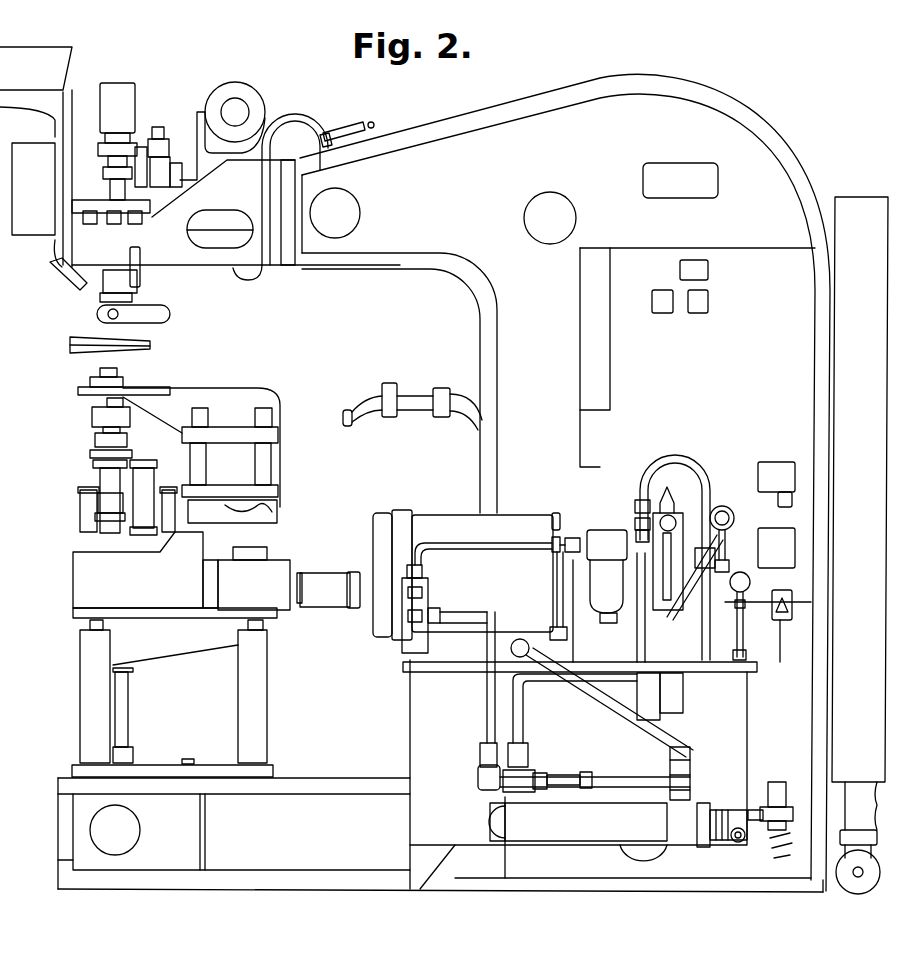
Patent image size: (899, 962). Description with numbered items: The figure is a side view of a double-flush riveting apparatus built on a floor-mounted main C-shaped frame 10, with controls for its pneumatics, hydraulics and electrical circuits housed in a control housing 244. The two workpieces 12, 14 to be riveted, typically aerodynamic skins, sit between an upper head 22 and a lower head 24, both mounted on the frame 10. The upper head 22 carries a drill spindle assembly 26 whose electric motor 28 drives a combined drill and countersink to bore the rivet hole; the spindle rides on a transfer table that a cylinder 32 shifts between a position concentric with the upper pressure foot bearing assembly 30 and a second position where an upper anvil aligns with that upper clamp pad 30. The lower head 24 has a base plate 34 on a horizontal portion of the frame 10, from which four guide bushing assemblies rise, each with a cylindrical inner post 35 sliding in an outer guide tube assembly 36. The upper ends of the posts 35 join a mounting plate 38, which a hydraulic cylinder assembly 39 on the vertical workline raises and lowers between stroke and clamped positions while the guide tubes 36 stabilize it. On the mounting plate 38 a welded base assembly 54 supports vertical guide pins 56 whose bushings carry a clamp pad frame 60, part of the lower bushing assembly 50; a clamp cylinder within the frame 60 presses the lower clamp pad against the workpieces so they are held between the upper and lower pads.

The main C-shaped frame 10 is at (777, 107).
The control housing 244 is at (857, 203).
The upper head 22 is at (43, 244).
The cylinder 32 is at (223, 230).
The electric motor 28 is at (123, 93).
The drill spindle assembly 26 is at (100, 180).
The upper pressure foot bearing assembly 30 is at (100, 305).
The upper workpiece 12 is at (100, 312).
The lower workpiece 14 is at (72, 358).
The lower bushing assembly 50 is at (143, 368).
The lower head 24 is at (25, 648).
The guide pins 56 is at (253, 503).
The welded base assembly 54 is at (267, 567).
The cylindrical inner posts 35 is at (105, 622).
The cylindrical outer guide tube assemblies 36 is at (87, 706).
The mounting plate 38 is at (187, 618).
The hydraulic cylinder assembly 39 is at (118, 718).
The base plate 34 is at (247, 773).
The clamp pad frame 60 is at (292, 422).